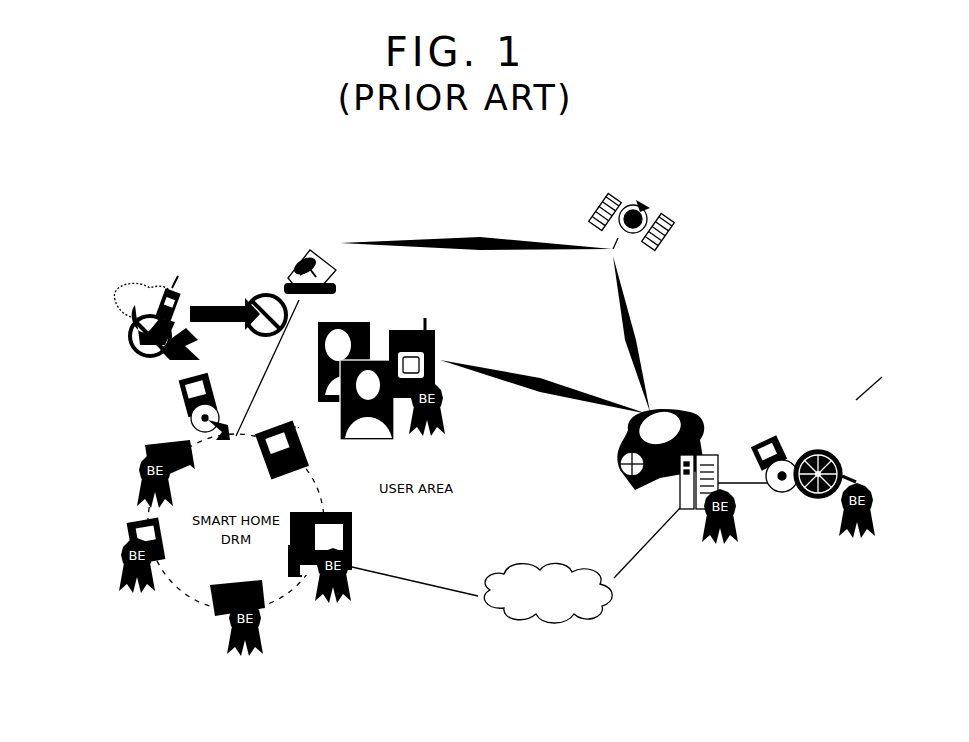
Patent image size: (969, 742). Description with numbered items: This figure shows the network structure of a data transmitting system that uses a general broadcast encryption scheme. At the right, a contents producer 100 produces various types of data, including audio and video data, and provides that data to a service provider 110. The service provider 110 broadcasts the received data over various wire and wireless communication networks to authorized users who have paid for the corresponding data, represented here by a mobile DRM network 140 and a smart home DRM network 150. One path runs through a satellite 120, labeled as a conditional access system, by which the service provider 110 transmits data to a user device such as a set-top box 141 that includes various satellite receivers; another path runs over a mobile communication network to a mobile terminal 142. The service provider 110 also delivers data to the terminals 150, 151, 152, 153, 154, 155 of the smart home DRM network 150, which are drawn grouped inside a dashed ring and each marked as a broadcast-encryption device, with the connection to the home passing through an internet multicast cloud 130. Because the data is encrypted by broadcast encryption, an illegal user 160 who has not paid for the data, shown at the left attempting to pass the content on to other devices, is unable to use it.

The contents producer 100 is at (826, 450).
The service provider 110 is at (660, 454).
The satellite 120 is at (656, 204).
The internet (multicast) 130 is at (536, 568).
The mobile DRM network 140 is at (352, 316).
The set-top box 141 is at (303, 256).
The mobile terminal 142 is at (440, 330).
The smart home DRM network 150 is at (286, 600).
The terminal 151 is at (358, 538).
The terminal 152 is at (312, 458).
The terminal 153 is at (136, 466).
The terminal 154 is at (115, 554).
The terminal 155 is at (216, 646).
The illegal user 160 is at (108, 318).